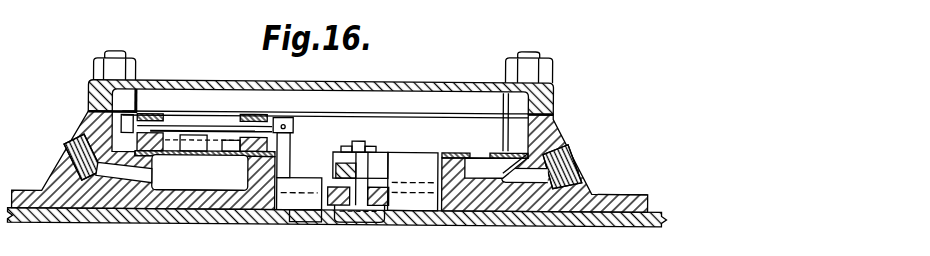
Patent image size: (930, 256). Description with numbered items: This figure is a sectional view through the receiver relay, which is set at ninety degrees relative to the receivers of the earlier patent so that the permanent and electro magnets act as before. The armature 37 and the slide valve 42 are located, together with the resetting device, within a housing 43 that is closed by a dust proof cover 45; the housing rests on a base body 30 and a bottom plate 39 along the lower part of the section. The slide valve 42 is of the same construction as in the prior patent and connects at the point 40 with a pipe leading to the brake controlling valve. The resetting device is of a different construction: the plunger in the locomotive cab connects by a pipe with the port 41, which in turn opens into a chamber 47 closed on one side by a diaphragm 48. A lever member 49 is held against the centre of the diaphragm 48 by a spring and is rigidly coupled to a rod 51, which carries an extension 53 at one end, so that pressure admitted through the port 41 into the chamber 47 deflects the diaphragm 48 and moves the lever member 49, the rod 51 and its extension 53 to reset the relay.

The base body 30 is at (110, 212).
The armature 37 is at (382, 152).
The bottom plate 39 is at (577, 226).
The point 40 is at (568, 162).
The port 41 is at (74, 153).
The slide valve 42 is at (481, 153).
The housing 43 is at (634, 198).
The dust proof cover 45 is at (420, 81).
The chamber 47 is at (200, 173).
The diaphragm 48 is at (200, 178).
The lever member 49 is at (197, 143).
The rod 51 is at (185, 128).
The extension 53 is at (291, 138).